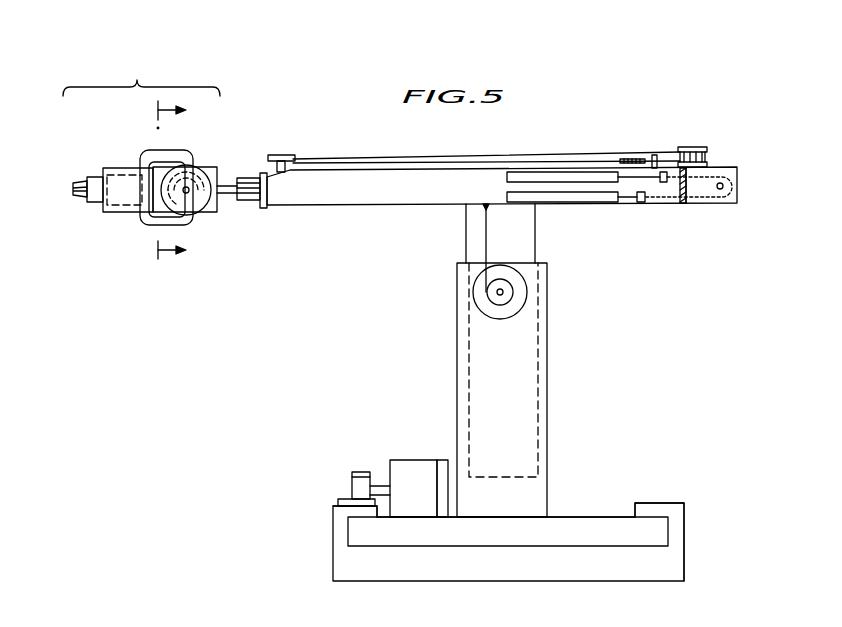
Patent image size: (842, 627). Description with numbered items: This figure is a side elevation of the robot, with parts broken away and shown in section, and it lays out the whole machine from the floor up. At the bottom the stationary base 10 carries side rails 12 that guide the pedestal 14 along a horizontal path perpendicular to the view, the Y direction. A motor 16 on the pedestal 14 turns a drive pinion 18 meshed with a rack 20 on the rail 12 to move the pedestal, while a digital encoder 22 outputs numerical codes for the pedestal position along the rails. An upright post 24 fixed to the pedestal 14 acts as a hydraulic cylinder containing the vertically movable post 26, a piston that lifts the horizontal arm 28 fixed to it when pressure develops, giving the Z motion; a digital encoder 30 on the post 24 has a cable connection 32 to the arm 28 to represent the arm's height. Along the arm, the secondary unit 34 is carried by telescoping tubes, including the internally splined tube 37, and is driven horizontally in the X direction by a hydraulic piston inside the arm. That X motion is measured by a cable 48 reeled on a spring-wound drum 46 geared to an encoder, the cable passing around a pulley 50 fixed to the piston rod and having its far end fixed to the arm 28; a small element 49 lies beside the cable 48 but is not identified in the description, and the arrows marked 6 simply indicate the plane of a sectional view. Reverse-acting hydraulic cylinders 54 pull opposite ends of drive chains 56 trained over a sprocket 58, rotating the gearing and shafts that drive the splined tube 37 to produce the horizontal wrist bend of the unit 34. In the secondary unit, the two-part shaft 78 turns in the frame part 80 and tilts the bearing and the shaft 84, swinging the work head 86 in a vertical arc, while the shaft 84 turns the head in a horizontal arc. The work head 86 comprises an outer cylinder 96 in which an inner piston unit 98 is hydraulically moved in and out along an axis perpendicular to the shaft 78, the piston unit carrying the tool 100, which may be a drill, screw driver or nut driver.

The stationary base 10 is at (682, 564).
The side rails 12 is at (336, 536).
The pedestal 14 is at (600, 520).
The motor 16 is at (404, 463).
The drive pinion 18 is at (360, 471).
The rack 20 is at (343, 498).
The digital encoder 22 is at (443, 460).
The upright post 24 is at (457, 380).
The vertically movable post 26 is at (466, 240).
The horizontal arm 28 is at (340, 207).
The digital encoder 30 is at (482, 306).
The cable connection 32 is at (488, 249).
The secondary unit 34 is at (141, 78).
The internally splined tube 37 is at (242, 205).
The spring-wound drum 46 is at (697, 145).
The cable 48 is at (461, 158).
The pin 49 is at (642, 160).
The pulley 50 is at (276, 157).
The reverse-acting hydraulic cylinders 54 is at (588, 178).
The drive chains 56 is at (666, 203).
The sprocket 58 is at (712, 184).
The two-part shaft 78 is at (187, 189).
The frame part 80 is at (165, 210).
The shaft 84 is at (627, 144).
The work head 86 is at (100, 159).
The outer cylinder 96 is at (110, 214).
The inner piston unit 98 is at (90, 202).
The tool 100 is at (81, 183).
The section line 6- 6 is at (179, 181).